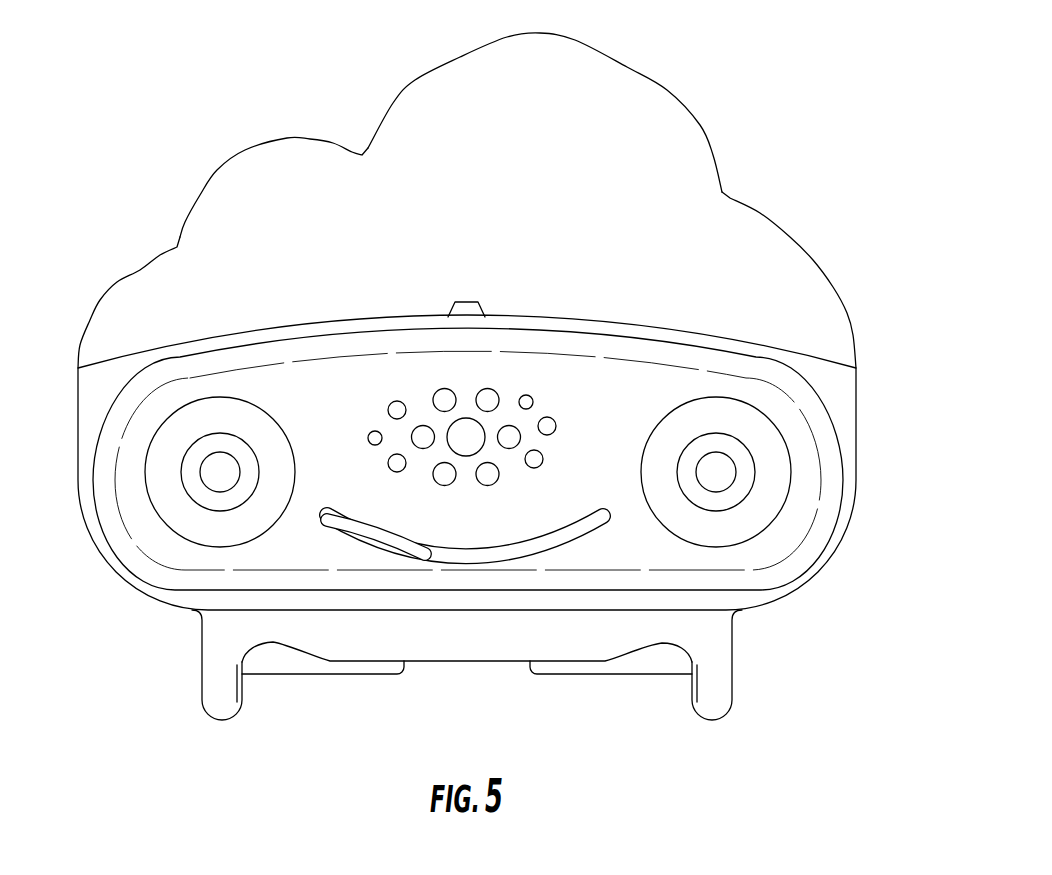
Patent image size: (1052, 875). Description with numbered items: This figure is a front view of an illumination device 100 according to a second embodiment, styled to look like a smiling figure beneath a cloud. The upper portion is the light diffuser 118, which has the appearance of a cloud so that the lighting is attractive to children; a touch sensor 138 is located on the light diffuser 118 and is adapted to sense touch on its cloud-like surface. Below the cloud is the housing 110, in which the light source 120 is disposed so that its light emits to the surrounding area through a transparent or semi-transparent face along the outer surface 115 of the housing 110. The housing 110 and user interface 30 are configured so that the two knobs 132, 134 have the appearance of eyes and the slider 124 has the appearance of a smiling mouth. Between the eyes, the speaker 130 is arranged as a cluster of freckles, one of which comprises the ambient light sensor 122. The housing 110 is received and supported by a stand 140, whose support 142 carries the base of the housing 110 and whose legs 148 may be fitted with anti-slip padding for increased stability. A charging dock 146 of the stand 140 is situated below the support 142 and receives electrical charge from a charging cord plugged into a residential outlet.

The illumination device 100 is at (472, 391).
The light diffuser 118 is at (140, 270).
The touch sensor 138 is at (592, 135).
The housing 110 is at (805, 570).
The user interface 30 is at (798, 533).
The outer surface 115 is at (820, 380).
The light source 120 is at (483, 308).
The ambient light sensor 122 is at (367, 430).
The speaker 130 is at (467, 376).
The knob 132 is at (178, 476).
The knob 134 is at (755, 477).
The slider 124 is at (337, 531).
The stand 140 is at (472, 690).
The support 142 is at (550, 622).
The charging dock 146 is at (390, 650).
The legs 148 is at (212, 697).